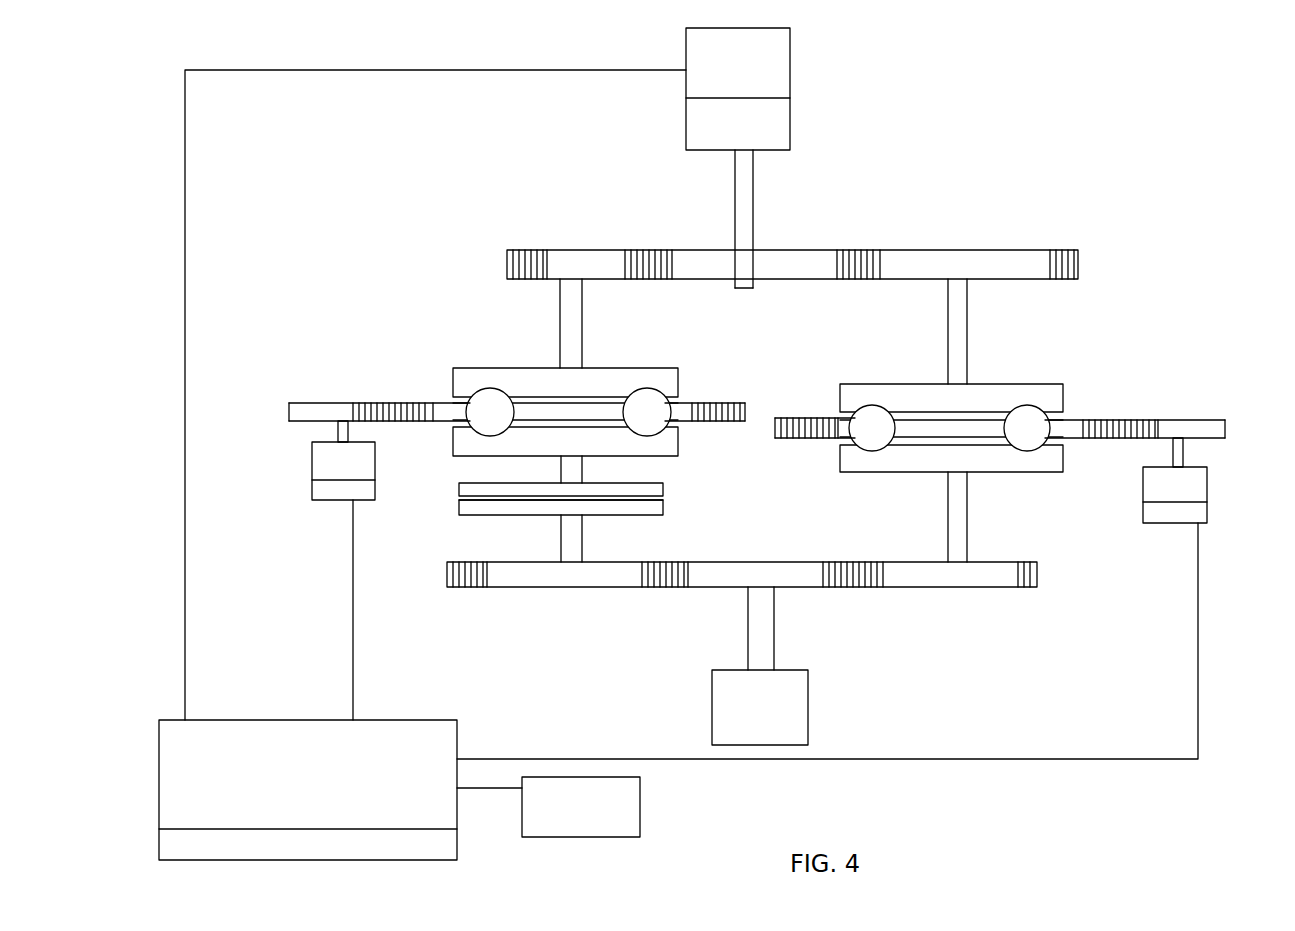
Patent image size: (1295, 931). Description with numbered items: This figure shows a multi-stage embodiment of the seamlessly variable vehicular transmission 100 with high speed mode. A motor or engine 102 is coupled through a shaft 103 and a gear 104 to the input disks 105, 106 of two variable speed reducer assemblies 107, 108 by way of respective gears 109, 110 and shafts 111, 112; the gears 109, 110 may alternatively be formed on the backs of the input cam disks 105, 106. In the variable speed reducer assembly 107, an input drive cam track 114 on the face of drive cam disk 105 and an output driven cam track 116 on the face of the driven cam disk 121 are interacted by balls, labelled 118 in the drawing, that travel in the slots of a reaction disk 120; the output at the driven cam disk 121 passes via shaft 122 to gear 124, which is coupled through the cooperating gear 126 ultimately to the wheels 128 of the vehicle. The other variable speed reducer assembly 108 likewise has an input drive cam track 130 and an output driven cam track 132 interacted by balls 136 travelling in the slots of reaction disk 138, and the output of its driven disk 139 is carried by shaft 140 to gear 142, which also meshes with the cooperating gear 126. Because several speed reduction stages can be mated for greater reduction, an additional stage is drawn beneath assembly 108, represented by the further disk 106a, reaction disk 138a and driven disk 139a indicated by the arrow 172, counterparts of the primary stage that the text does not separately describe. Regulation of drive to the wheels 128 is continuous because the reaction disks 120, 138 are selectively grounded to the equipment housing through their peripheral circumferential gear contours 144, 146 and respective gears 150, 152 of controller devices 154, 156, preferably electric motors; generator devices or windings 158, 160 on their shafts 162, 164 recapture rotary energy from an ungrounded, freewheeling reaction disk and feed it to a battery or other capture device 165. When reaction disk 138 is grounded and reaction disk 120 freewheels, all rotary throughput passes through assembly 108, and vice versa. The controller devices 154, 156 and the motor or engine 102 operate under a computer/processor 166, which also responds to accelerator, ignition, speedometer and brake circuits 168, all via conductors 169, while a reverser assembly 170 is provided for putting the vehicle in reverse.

The seamlessly variable vehicular transmission 100 is at (1024, 121).
The motor or engine 102 is at (715, 66).
The shaft 103 is at (754, 204).
The gear 104 is at (695, 250).
The input disk 105 is at (835, 392).
The input disk 106 is at (663, 367).
The auxiliary upper plate 106a is at (525, 488).
The variable speed reducer assembly 107 is at (1148, 267).
The variable speed reducer assembly 108 is at (324, 218).
The gear 109 is at (1018, 252).
The gear 110 is at (547, 255).
The shaft 111 is at (967, 338).
The shaft 112 is at (573, 310).
The input drive cam track 114 is at (865, 410).
The output driven cam track 116 is at (870, 452).
The right ball of second assembly 118 is at (1038, 417).
The reaction disk 120 is at (820, 438).
The driven cam disk 121 is at (1005, 472).
The shaft 122 is at (947, 508).
The gear 124 is at (943, 587).
The cooperating gear 126 is at (788, 587).
The wheels 128 is at (737, 720).
The input drive cam track 130 is at (491, 389).
The output driven cam track 132 is at (483, 436).
The balls 136 is at (488, 405).
The reaction disk 138 is at (692, 407).
The auxiliary lower plate left end 138a is at (460, 502).
The driven disk 139 is at (593, 445).
The auxiliary lower plate 139a is at (597, 517).
The shaft 140 is at (561, 542).
The gear 142 is at (597, 577).
The peripheral circumferential gear contour 144 is at (792, 418).
The peripheral circumferential gear contour 146 is at (393, 402).
The gear 150 is at (1210, 420).
The gear 152 is at (322, 402).
The controller device 154 is at (1200, 483).
The controller device 156 is at (312, 470).
The generator device or winding 158 is at (1202, 513).
The generator device or winding 160 is at (325, 497).
The shaft 162 is at (1185, 455).
The shaft 164 is at (338, 432).
The battery or other capture device 165 is at (282, 861).
The computer/processor 166 is at (282, 798).
The accelerator, ignition, speedometer and brake circuits 168 is at (558, 822).
The conductors 169 is at (183, 350).
The reverser assembly 170 is at (715, 140).
The direction arrow / gap 172 is at (672, 514).